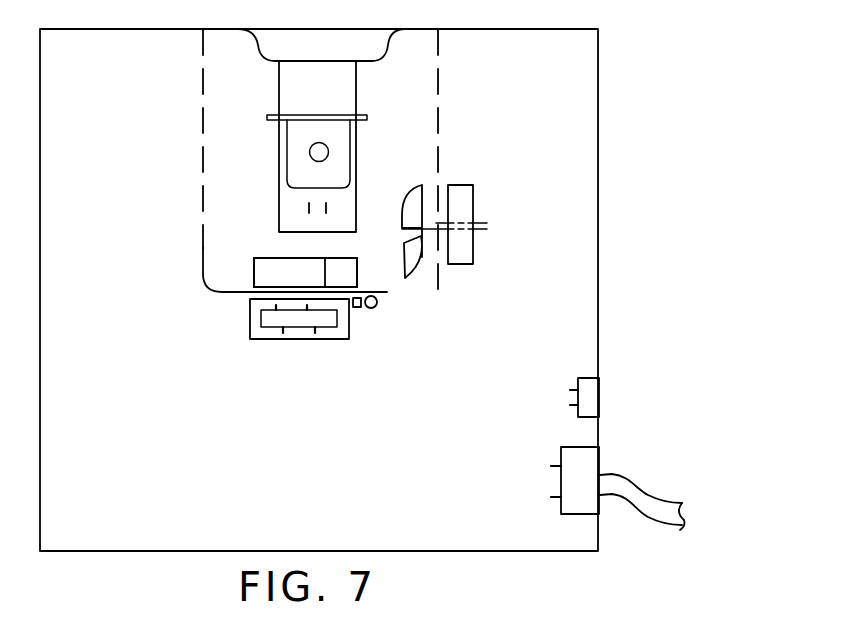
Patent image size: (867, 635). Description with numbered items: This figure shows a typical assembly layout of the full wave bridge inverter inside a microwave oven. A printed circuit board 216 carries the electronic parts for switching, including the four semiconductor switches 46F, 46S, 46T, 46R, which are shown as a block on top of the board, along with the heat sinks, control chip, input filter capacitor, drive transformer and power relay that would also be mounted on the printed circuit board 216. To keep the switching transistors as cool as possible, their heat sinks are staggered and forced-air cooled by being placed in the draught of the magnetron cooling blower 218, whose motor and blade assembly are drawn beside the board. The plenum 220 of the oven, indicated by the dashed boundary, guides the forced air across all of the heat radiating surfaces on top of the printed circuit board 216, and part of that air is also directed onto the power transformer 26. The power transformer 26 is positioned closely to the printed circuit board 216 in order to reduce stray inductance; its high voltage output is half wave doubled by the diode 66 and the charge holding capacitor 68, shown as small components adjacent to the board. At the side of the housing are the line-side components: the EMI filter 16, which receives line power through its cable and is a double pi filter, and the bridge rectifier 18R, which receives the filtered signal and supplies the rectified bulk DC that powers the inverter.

The printed circuit board 216 is at (228, 293).
The plenum 220 is at (438, 130).
The magnetron cooling blower 218 is at (475, 213).
The semiconductor switch 46F is at (357, 277).
The semiconductor switch 46S is at (478, 281).
The semiconductor switch 46T is at (476, 296).
The semiconductor switch 46R is at (476, 296).
The power transformer 26 is at (315, 333).
The diode 66 is at (371, 309).
The charge holding capacitor 68 is at (400, 367).
The bridge rectifier 18R is at (600, 388).
The EMI filter 16 is at (582, 514).